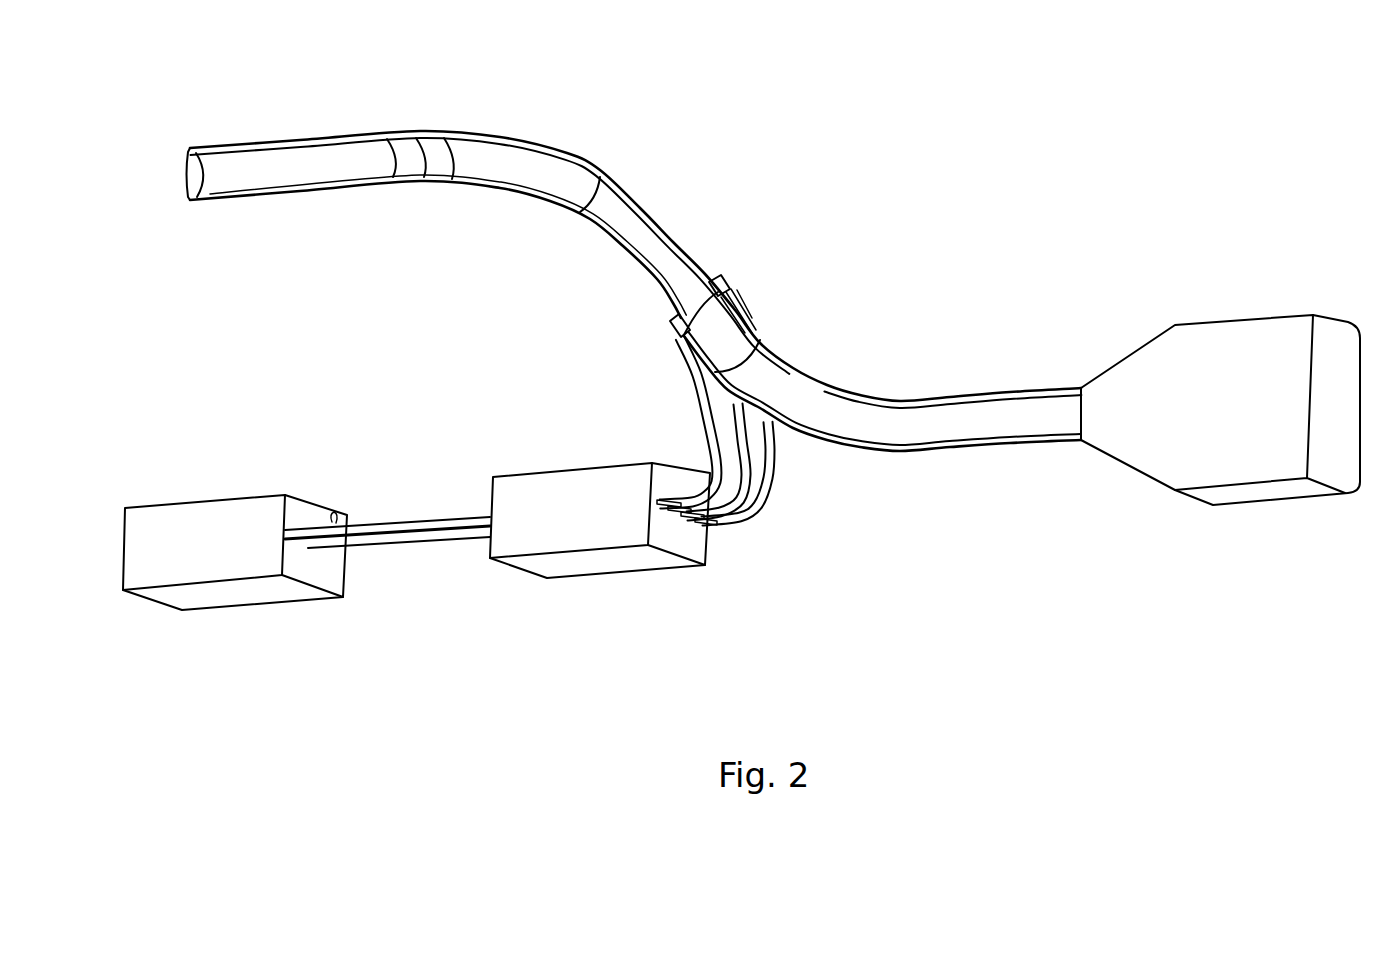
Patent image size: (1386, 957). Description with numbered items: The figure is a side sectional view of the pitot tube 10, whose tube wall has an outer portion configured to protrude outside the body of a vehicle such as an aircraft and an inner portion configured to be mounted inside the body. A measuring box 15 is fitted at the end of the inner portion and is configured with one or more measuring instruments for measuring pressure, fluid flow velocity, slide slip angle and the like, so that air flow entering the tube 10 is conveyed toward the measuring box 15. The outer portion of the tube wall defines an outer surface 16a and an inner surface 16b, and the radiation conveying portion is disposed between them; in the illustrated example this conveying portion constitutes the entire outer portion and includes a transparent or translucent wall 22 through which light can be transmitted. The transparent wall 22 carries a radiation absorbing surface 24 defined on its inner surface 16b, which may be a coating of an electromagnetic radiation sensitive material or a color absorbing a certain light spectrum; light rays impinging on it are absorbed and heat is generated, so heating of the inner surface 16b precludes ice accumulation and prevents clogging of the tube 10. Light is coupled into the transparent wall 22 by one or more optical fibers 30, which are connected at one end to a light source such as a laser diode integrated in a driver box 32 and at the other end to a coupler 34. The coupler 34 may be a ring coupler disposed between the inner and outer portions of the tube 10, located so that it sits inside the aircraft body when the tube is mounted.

The pitot tube 10 is at (866, 186).
The measuring box 15 is at (1220, 433).
The outer surface 16a is at (321, 140).
The inner surface 16b is at (232, 178).
The transparent wall 22 is at (598, 172).
The radiation absorbing surface 24 is at (487, 160).
The optical fibers 30 is at (722, 492).
The driver box 32 is at (575, 495).
The coupler 34 is at (740, 298).